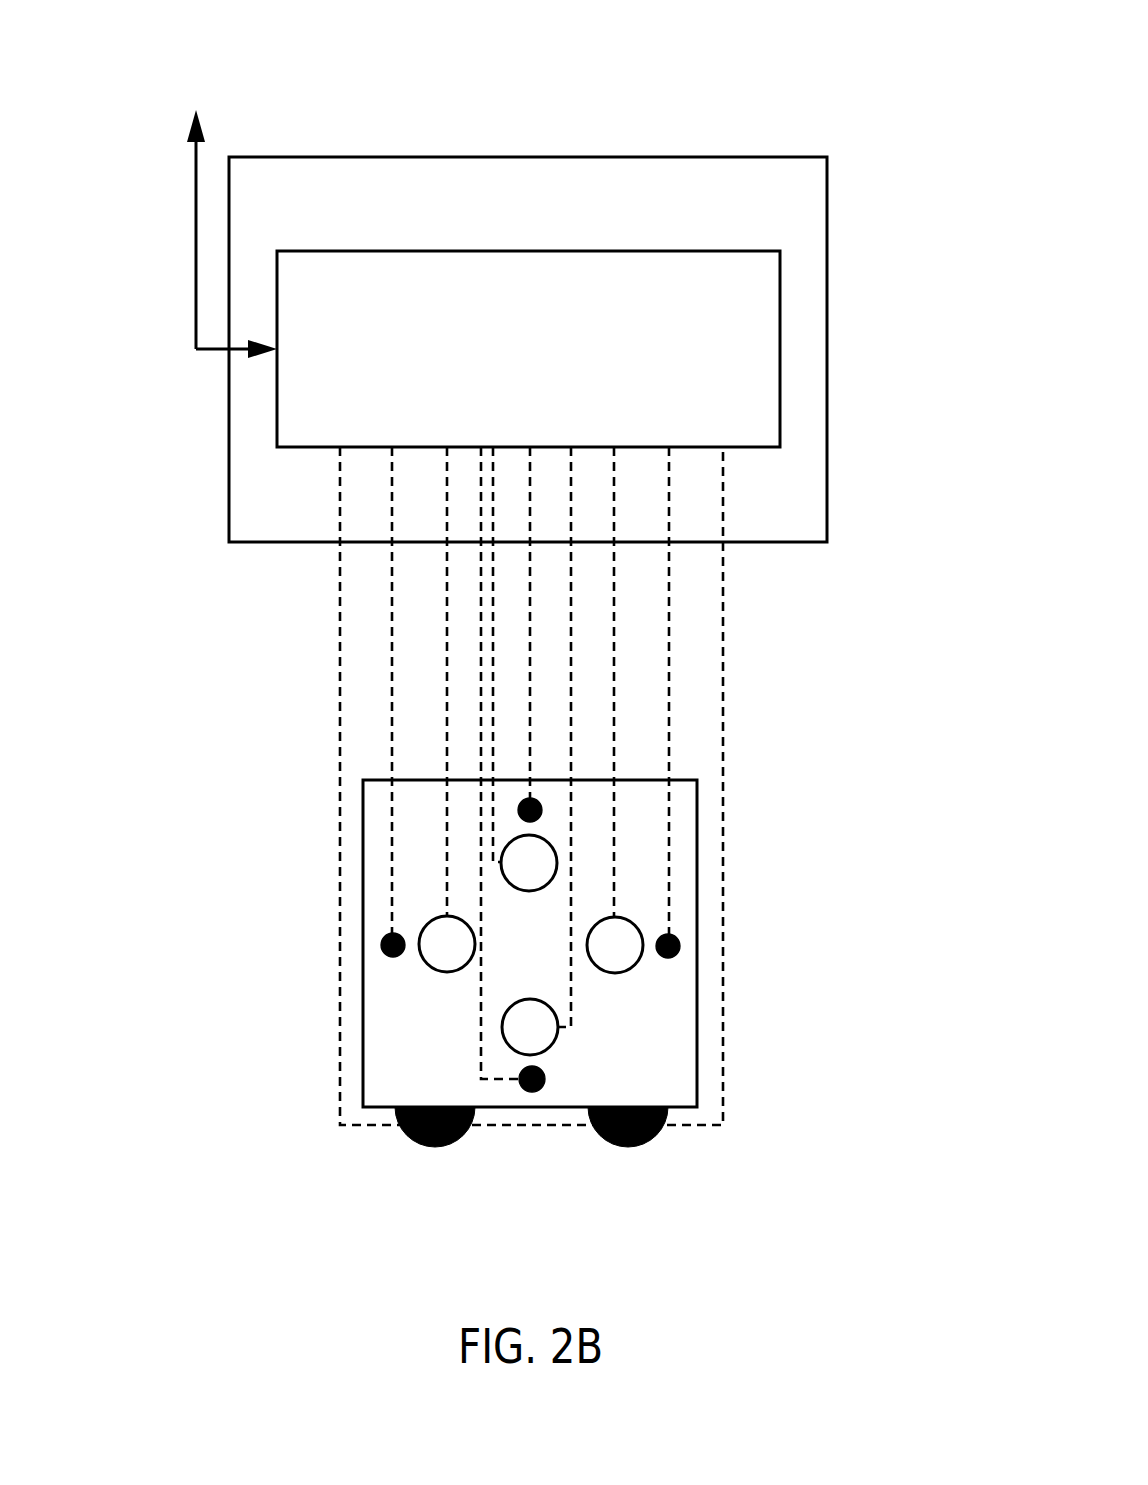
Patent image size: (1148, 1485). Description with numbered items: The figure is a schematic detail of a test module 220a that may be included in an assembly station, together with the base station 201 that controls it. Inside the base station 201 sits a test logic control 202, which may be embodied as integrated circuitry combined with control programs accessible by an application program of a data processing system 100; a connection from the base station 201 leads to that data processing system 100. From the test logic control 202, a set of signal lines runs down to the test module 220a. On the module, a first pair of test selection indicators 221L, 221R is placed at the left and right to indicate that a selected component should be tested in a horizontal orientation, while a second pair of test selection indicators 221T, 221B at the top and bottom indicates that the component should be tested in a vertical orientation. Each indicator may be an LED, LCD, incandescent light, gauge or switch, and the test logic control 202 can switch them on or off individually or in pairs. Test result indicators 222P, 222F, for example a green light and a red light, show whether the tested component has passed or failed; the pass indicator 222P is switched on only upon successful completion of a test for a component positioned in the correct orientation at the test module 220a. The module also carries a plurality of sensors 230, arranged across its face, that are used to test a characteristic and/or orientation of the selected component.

The data processing system 100 is at (221, 188).
The base station 201 is at (528, 157).
The test logic control 202 is at (528, 251).
The test module 220a is at (363, 862).
The test selection indicator 221T is at (542, 809).
The test selection indicator 221L is at (381, 945).
The test selection indicator 221R is at (680, 946).
The test selection indicator 221B is at (532, 1092).
The test result indicator 222F is at (435, 1147).
The test result indicator 222P is at (628, 1150).
The sensors 230 is at (548, 888).